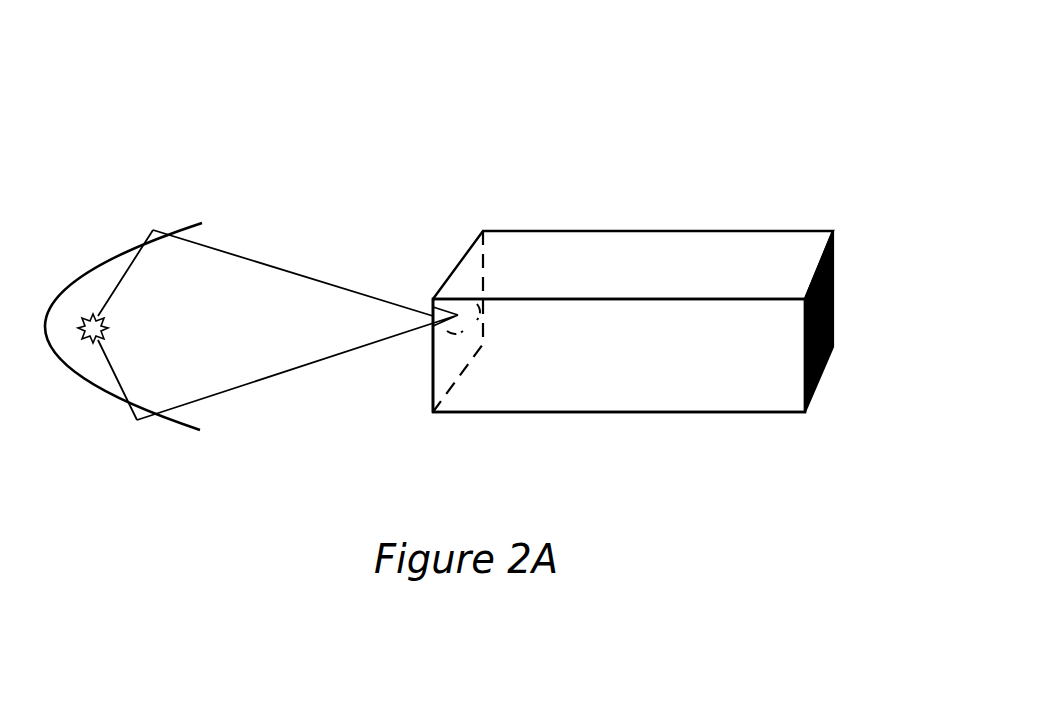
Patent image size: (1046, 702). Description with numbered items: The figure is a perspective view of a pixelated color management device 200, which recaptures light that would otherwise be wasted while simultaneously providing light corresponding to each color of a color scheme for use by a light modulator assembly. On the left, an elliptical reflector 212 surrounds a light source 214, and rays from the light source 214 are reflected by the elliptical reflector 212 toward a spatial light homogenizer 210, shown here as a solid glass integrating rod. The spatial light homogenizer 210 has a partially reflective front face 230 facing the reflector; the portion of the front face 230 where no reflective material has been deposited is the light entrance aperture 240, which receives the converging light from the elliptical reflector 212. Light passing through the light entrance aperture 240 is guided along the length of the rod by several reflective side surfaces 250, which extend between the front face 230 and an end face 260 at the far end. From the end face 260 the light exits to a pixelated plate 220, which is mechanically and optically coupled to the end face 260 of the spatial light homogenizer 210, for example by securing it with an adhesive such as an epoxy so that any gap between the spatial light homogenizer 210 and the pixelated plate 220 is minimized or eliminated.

The pixelated color management device 200 is at (432, 80).
The spatial light homogenizer 210 is at (641, 218).
The elliptical reflector 212 is at (115, 240).
The light source 214 is at (86, 341).
The pixelated plate 220 is at (833, 287).
The front face 230 is at (418, 357).
The light entrance aperture 240 is at (422, 308).
The reflective side surfaces 250 is at (643, 362).
The end face 260 is at (816, 248).